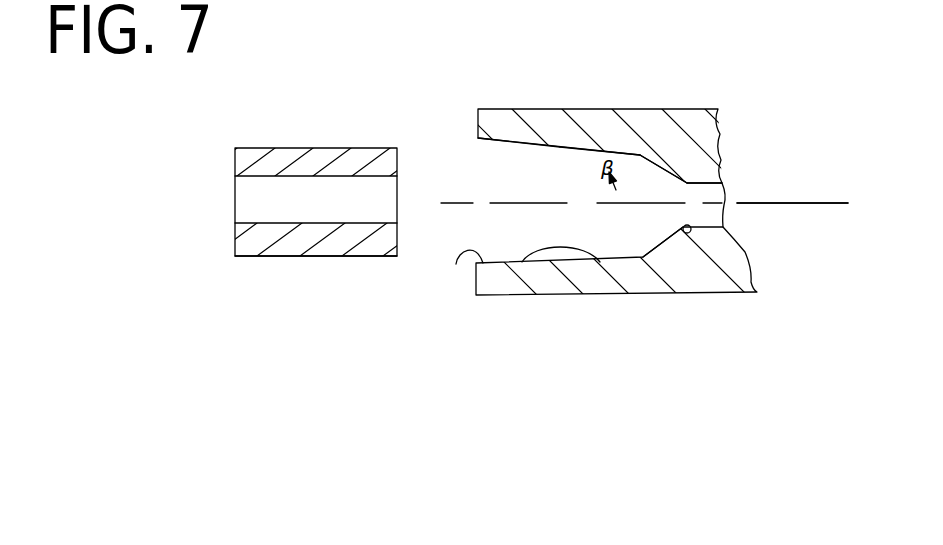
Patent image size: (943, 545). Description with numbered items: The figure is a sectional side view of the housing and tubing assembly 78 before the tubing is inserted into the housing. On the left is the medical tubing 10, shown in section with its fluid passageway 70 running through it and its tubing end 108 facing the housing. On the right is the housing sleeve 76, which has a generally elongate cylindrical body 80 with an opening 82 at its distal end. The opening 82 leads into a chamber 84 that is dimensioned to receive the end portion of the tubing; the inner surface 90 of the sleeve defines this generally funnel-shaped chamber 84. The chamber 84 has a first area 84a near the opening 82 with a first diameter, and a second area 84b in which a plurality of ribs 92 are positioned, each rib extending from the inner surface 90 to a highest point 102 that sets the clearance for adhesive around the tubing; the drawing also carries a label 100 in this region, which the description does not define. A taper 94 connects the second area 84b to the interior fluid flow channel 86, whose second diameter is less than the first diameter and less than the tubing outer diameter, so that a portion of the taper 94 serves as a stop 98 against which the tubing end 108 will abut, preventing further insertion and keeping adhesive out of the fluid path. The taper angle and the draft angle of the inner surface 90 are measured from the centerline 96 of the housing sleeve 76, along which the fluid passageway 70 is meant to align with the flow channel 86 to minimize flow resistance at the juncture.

The medical tubing 10 is at (369, 135).
The fluid passageway 70 is at (278, 203).
The tubing end 108 is at (333, 256).
The elongate cylindrical body 80 is at (580, 108).
The opening 82 is at (446, 179).
The chamber 84 is at (640, 172).
The first area 84a is at (489, 150).
The second area 84b is at (625, 156).
The interior fluid flow channel 86 is at (716, 198).
The taper 94 is at (656, 168).
The centerline 96 is at (780, 206).
The highest point of rib 102 is at (542, 154).
The housing sleeve 76 is at (560, 322).
The housing and tubing assembly 78 is at (458, 325).
The inner surface 90 is at (450, 270).
The ribs 92 is at (574, 254).
The stop 98 is at (687, 233).
The top surface 100 is at (548, 236).